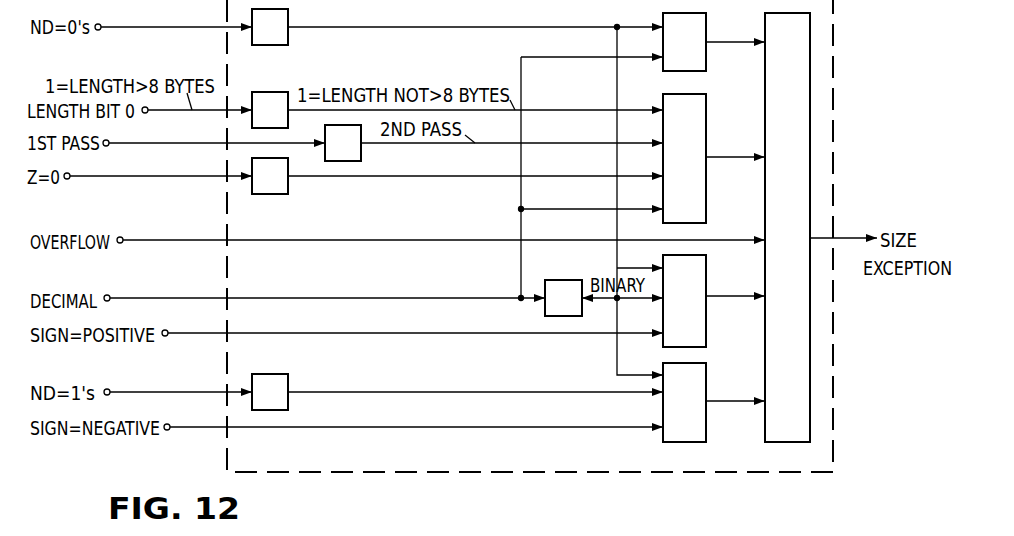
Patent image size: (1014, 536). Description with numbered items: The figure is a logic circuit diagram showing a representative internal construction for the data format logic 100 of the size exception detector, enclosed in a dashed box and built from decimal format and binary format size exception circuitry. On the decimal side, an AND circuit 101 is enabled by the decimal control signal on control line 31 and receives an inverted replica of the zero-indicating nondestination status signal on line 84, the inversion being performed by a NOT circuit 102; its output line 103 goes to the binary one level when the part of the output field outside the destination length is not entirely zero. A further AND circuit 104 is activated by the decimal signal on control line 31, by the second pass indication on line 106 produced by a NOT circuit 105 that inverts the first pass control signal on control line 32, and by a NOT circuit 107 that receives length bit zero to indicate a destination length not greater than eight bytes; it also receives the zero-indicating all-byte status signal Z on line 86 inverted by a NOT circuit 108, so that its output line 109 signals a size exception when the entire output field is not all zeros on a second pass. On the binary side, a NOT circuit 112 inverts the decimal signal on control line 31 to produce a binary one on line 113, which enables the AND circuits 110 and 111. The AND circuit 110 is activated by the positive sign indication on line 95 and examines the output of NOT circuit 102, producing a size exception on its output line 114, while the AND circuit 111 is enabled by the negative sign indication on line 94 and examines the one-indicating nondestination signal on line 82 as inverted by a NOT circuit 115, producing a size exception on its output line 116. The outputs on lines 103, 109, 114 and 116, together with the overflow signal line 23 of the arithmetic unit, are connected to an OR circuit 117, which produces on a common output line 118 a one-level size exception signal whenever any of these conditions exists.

The output line of AND circuit 83 84 is at (175, 27).
The NOT circuit 102 is at (288, 14).
The NOT circuit 107 is at (262, 92).
The control line 32 is at (178, 142).
The NOT circuit 105 is at (361, 152).
The output line of all-byte status generator 85 86 is at (208, 176).
The NOT circuit 108 is at (290, 188).
The line 106 is at (545, 145).
The AND circuit 101 is at (660, 15).
The output line of AND circuit 101 103 is at (723, 42).
The AND circuit 104 is at (700, 105).
The output line of AND circuit 104 109 is at (725, 158).
The overflow signal line 23 is at (388, 242).
The control line 31 is at (300, 302).
The NOT circuit 112 is at (560, 278).
The line 113 is at (618, 350).
The output line 95 is at (410, 335).
The AND circuit 110 is at (700, 275).
The output line of AND circuit 110 114 is at (742, 295).
The output line 82 is at (160, 393).
The NOT circuit 115 is at (288, 380).
The OR circuit output line 94 is at (213, 425).
The AND circuit 111 is at (700, 375).
The output line of AND circuit 111 116 is at (738, 398).
The OR circuit 117 is at (802, 67).
The common output line 118 is at (843, 240).
The data format logic 100 is at (832, 457).